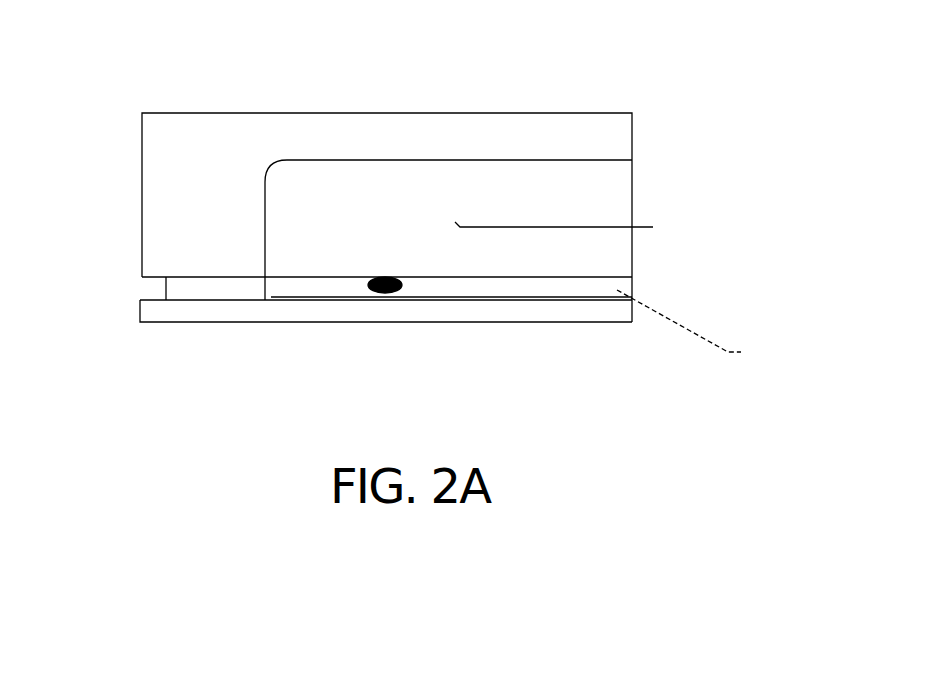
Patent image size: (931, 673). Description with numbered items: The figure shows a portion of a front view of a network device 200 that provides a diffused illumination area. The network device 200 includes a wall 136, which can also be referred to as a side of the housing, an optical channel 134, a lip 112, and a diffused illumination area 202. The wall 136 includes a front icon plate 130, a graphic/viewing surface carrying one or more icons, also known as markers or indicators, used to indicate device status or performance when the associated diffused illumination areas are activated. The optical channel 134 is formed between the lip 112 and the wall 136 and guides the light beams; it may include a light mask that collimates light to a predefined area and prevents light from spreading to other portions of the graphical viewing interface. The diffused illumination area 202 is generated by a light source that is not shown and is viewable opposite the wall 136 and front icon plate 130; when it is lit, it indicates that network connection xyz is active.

The network device 200 is at (408, 42).
The wall 136 is at (206, 164).
The front icon plate 130 is at (586, 200).
The optical channel 134 is at (155, 283).
The lip 112 is at (307, 310).
The diffused illumination area 202 is at (387, 293).